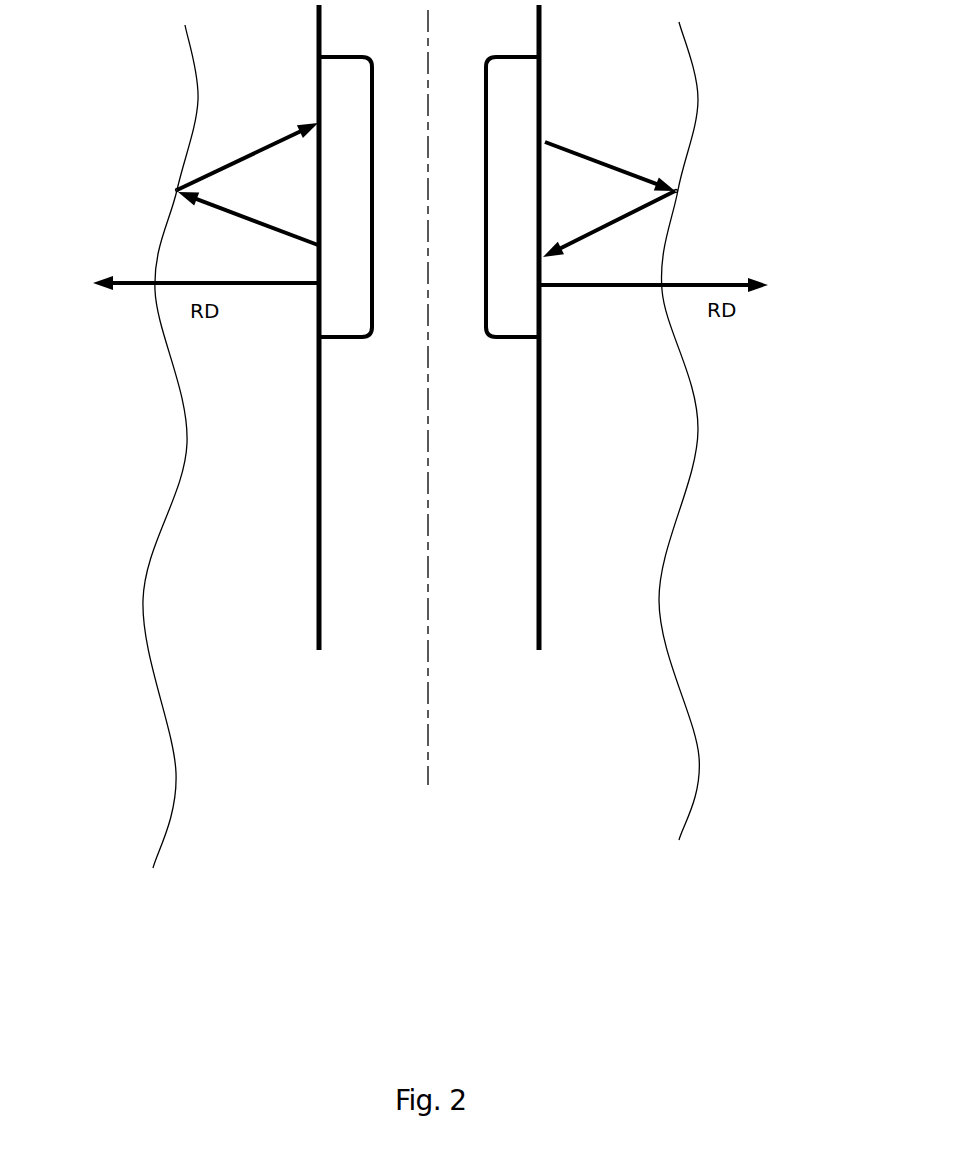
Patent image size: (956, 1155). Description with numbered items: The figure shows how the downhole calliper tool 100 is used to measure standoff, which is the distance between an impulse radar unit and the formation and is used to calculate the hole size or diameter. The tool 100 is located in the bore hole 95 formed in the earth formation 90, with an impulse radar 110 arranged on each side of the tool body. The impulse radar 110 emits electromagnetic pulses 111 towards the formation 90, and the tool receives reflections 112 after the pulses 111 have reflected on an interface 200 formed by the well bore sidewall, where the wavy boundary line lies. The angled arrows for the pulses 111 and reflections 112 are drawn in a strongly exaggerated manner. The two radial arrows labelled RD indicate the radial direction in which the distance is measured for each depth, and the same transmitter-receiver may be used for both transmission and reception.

The earth formation 90 is at (66, 456).
The bore hole 95 is at (257, 774).
The downhole calliper tool 100 is at (504, 553).
The impulse radar 110 is at (333, 95).
The electromagnetic pulses 111 is at (426, 190).
The reflections 112 is at (426, 190).
The interface 200 is at (175, 189).